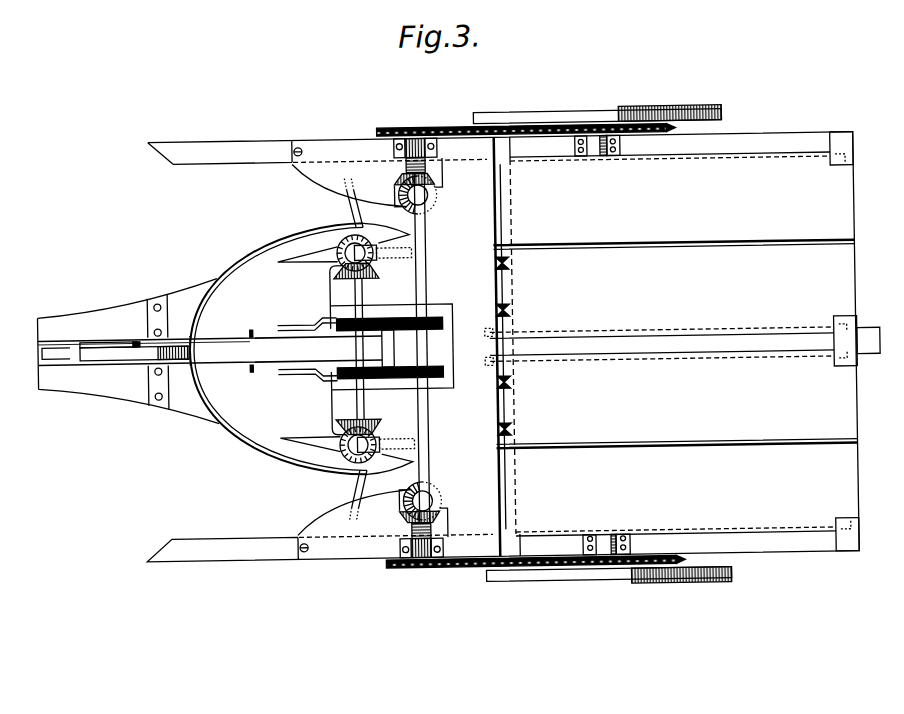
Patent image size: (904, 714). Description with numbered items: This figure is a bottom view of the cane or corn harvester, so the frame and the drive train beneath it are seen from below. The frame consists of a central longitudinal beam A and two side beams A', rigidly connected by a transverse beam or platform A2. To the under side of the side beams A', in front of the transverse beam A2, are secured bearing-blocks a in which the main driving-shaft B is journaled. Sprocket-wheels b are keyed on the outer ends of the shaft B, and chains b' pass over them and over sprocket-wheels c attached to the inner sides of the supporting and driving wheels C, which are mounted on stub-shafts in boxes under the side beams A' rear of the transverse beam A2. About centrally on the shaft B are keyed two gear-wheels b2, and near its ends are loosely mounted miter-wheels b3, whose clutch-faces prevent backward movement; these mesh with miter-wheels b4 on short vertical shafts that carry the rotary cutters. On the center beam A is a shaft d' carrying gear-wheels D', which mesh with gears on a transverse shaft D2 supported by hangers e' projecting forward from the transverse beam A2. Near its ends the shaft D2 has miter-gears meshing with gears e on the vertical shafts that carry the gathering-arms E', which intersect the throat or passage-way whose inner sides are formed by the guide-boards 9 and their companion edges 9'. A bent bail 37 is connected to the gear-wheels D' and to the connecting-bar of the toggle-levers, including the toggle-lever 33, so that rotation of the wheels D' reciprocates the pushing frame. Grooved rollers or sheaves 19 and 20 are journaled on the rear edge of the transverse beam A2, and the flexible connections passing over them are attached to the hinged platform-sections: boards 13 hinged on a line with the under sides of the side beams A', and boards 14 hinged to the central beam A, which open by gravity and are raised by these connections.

The side beams A' is at (499, 336).
The central longitudinal beam A is at (210, 351).
The transverse beam or platform A2 is at (481, 347).
The main driving-shaft B is at (426, 422).
The sprocket-wheels b is at (531, 347).
The chains b' is at (436, 347).
The bearing-blocks a is at (397, 148).
The gear-wheels b2 is at (445, 323).
The miter-wheels b3 is at (441, 181).
The miter-wheels b4 is at (414, 207).
The supporting and driving wheels C is at (541, 115).
The sprocket-wheels c is at (590, 123).
The gear-wheels D' is at (392, 349).
The shaft d' is at (391, 348).
The transverse shaft D2 is at (356, 293).
The gathering-arms E' is at (316, 327).
The gears e is at (351, 350).
The hangers e' is at (364, 353).
The guide-boards 9 is at (300, 350).
The curved guide plate inner edge 9' is at (279, 350).
The hinged boards 13 is at (675, 342).
The boards 14 is at (682, 340).
The grooved rollers or sheaves 19 is at (504, 264).
The grooved rollers or sheaves 20 is at (504, 311).
The toggle-lever 33 is at (218, 330).
The bent bail 37 is at (321, 316).